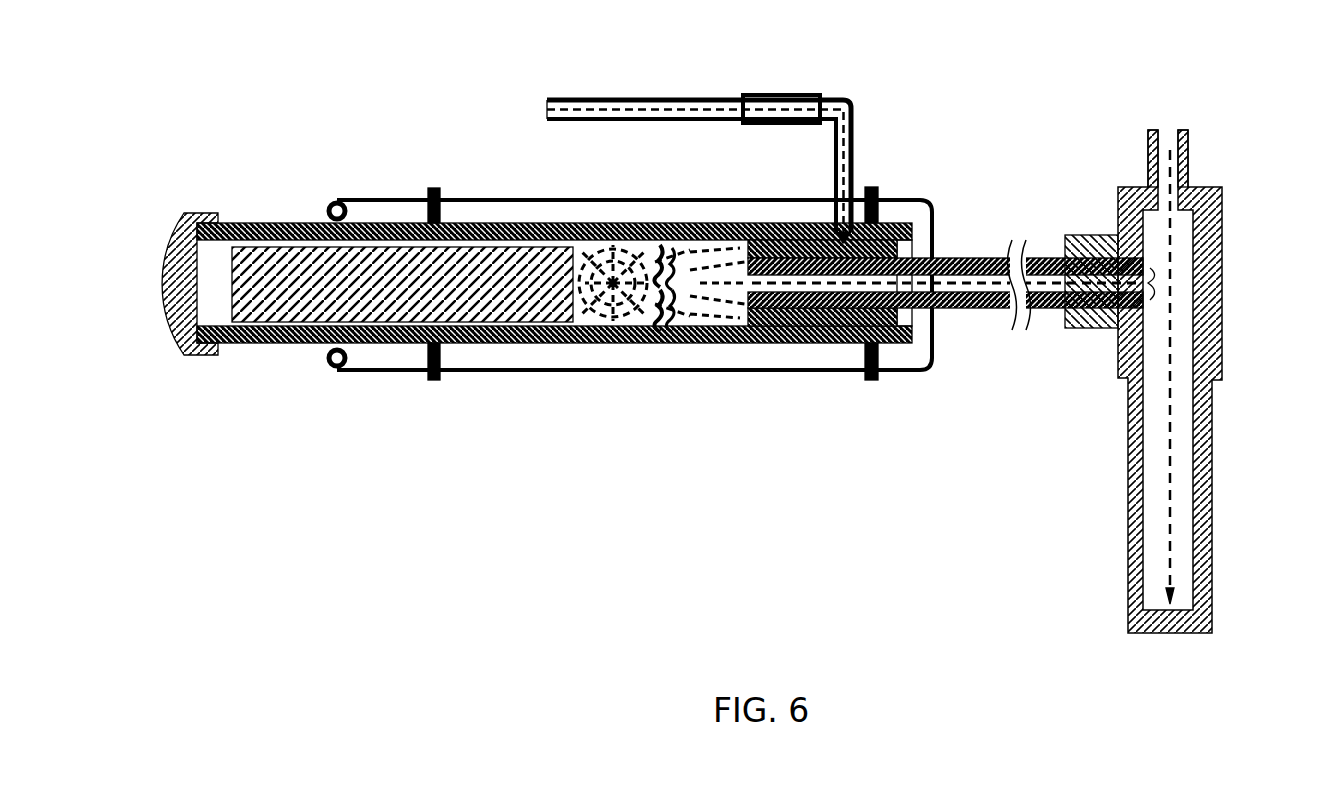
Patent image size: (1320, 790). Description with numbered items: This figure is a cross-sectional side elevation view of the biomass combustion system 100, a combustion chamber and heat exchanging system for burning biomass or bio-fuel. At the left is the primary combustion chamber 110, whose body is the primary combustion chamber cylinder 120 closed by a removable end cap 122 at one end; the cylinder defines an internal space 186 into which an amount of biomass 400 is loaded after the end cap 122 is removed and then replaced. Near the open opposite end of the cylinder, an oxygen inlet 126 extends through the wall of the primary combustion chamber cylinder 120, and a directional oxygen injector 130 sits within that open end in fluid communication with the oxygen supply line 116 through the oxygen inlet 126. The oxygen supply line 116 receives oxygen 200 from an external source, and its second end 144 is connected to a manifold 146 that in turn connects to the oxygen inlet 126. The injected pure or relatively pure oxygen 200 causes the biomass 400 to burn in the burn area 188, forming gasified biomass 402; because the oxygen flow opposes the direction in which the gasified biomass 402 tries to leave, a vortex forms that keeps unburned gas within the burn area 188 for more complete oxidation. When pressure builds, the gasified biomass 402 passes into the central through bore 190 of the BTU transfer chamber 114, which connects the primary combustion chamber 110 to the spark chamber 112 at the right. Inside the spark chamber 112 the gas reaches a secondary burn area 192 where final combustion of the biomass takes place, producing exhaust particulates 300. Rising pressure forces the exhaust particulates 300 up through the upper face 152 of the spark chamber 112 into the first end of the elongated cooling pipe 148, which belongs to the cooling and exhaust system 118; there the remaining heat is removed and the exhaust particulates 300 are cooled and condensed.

The biomass combustion system 100 is at (374, 74).
The primary combustion chamber 110 is at (299, 220).
The spark chamber 112 is at (1200, 362).
The BTU transfer chamber 114 is at (960, 258).
The oxygen supply line 116 is at (677, 97).
The cooling and exhaust system 118 is at (751, 370).
The primary combustion chamber cylinder 120 is at (256, 225).
The removable end cap 122 is at (205, 357).
The oxygen inlet 126 is at (832, 218).
The directional oxygen injector 130 is at (905, 248).
The second end of oxygen supply line 144 is at (740, 95).
The manifold 146 is at (855, 120).
The elongated cooling pipe 148 is at (1185, 135).
The upper face 152 is at (1205, 187).
The internal space 186 is at (219, 298).
The burn area 188 is at (611, 314).
The central through bore 190 is at (970, 306).
The secondary burn area 192 is at (1183, 510).
The oxygen 200 is at (637, 122).
The exhaust particulates 300 is at (1167, 150).
The biomass 400 is at (298, 320).
The gasified biomass 402 is at (1048, 300).